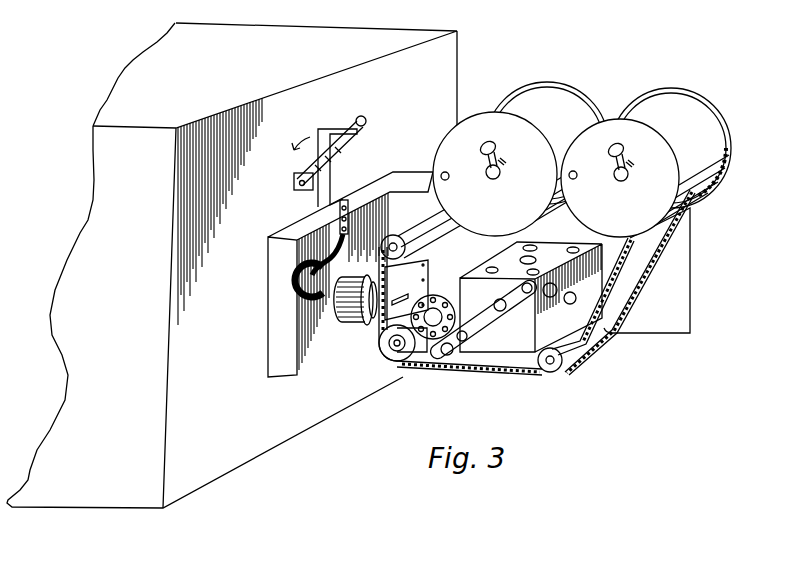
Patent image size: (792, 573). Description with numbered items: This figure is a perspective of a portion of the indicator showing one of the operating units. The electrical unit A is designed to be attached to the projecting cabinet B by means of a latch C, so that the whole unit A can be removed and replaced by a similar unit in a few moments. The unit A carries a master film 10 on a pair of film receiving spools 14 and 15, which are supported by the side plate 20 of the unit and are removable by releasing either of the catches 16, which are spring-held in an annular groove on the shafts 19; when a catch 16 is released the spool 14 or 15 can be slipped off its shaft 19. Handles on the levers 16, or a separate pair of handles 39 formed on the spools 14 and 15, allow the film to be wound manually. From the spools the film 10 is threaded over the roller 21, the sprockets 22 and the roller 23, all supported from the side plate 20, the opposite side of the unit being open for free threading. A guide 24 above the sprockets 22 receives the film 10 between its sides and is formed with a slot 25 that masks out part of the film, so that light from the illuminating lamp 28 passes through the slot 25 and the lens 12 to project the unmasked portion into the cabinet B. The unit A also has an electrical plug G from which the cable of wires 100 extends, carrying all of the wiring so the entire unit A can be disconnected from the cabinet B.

The projecting cabinet B is at (228, 265).
The electrical unit A is at (530, 77).
The latch C is at (336, 185).
The electrical plug G is at (305, 283).
The cable of wires 100 is at (308, 278).
The master film 10 is at (596, 336).
The lens 12 is at (355, 323).
The film receiving spool 14 is at (618, 112).
The film receiving spool 15 is at (582, 142).
The catch 16 is at (482, 155).
The shaft 19 is at (497, 180).
The side plate 20 is at (672, 250).
The roller 21 is at (551, 372).
The sprockets 22 is at (405, 361).
The roller 23 is at (400, 234).
The guide 24 is at (372, 328).
The slot 25 is at (395, 281).
The illuminating lamp 28 is at (578, 288).
The handles 39 is at (447, 180).